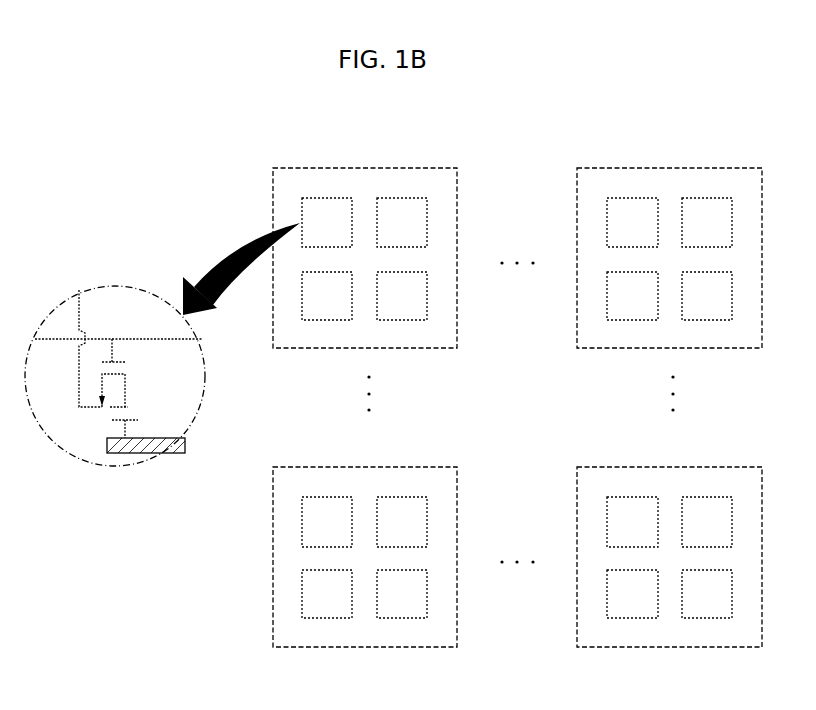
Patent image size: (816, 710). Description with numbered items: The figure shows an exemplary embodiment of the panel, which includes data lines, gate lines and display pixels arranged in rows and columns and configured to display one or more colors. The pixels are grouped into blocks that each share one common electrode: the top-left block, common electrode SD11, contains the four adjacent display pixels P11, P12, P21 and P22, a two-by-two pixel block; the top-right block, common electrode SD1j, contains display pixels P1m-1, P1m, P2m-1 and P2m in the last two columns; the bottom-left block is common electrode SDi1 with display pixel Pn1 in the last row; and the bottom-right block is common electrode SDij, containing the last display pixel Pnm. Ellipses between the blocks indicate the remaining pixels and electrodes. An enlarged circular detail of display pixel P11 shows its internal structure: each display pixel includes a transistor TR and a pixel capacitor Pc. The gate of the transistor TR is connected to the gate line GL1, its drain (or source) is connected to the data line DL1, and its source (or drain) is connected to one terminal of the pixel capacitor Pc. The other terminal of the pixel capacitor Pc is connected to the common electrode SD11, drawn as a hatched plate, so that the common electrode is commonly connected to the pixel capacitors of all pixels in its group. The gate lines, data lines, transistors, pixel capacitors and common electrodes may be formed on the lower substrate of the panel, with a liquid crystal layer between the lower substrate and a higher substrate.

The common electrode SD11 is at (421, 167).
The common electrode SD1j is at (726, 167).
The common electrode SDi1 is at (421, 648).
The common electrode SDij is at (726, 648).
The display pixel P11 is at (327, 222).
The display pixel P12 is at (402, 222).
The display pixel P21 is at (327, 296).
The display pixel P22 is at (402, 296).
The display pixel P1m-1 is at (632, 222).
The display pixel P1m is at (707, 222).
The display pixel P2m-1 is at (632, 296).
The display pixel P2m is at (707, 296).
The display pixel Pn1 is at (327, 594).
The display pixel Pnm is at (707, 594).
The data line DL1 is at (80, 306).
The gate line GL1 is at (60, 341).
The transistor TR is at (127, 391).
The pixel capacitor Pc is at (138, 415).